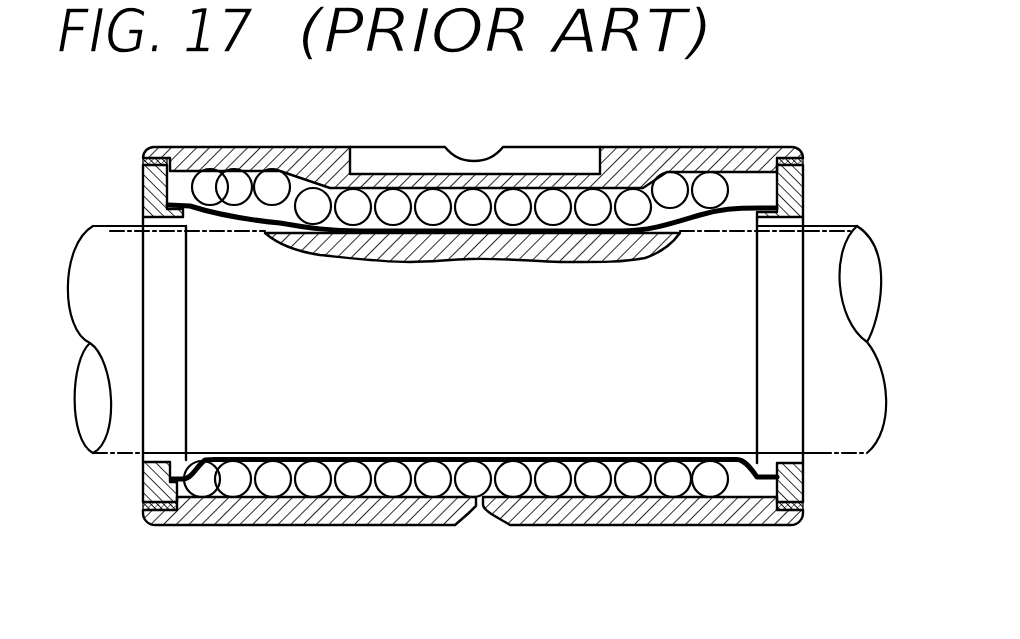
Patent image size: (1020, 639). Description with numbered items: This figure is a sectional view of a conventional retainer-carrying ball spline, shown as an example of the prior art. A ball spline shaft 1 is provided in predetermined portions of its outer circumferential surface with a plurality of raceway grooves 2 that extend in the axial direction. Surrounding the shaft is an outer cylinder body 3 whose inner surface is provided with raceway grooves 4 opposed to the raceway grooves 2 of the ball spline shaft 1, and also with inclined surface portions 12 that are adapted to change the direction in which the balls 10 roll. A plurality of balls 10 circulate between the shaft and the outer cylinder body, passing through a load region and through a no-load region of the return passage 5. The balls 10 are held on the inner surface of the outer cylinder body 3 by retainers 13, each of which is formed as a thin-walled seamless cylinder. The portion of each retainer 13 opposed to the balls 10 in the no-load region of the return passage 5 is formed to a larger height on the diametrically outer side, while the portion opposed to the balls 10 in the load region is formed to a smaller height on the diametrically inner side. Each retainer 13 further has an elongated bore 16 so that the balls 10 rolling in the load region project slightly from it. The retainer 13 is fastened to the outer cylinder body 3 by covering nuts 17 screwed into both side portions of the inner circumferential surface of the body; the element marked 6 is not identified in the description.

The ball spline shaft 1 is at (91, 424).
The raceway grooves 2 is at (105, 226).
The outer cylinder body 3 is at (199, 160).
The raceway grooves 4 is at (434, 196).
The return passage 5 is at (386, 460).
The end ball 6 is at (736, 183).
The balls 10 is at (313, 203).
The inclined surface portions 12 is at (650, 182).
The retainers 13 is at (762, 196).
The elongated bore 16 is at (641, 264).
The covering nuts 17 is at (806, 187).